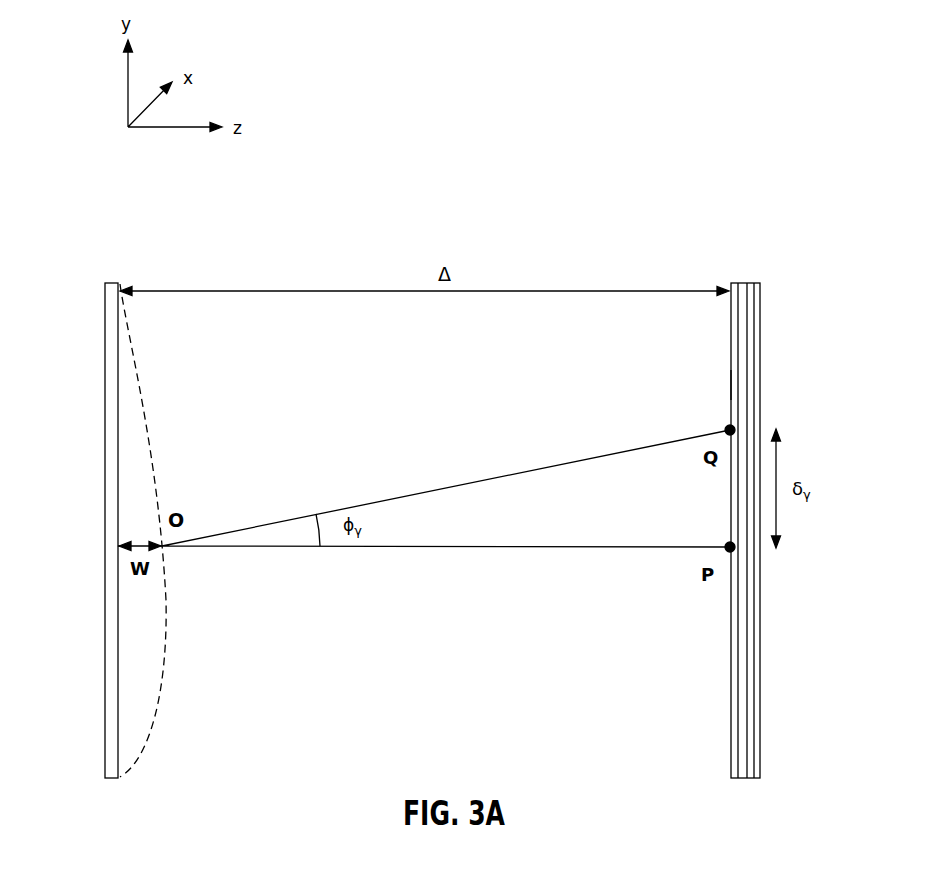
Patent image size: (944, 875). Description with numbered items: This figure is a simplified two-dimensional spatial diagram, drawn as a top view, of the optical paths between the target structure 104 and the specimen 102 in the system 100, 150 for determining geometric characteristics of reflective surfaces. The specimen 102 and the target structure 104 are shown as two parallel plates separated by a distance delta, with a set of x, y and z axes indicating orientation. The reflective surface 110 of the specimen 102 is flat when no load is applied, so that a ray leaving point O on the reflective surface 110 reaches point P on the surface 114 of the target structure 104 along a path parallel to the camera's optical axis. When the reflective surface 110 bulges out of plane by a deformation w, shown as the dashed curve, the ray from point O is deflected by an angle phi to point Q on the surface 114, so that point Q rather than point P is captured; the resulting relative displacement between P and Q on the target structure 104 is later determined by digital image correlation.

The system 100 is at (766, 119).
The display system 150 is at (708, 153).
The specimen 102 is at (105, 430).
The target structure 104 is at (760, 367).
The reflective surface 110 is at (139, 376).
The surface of the target structure 114 is at (731, 385).